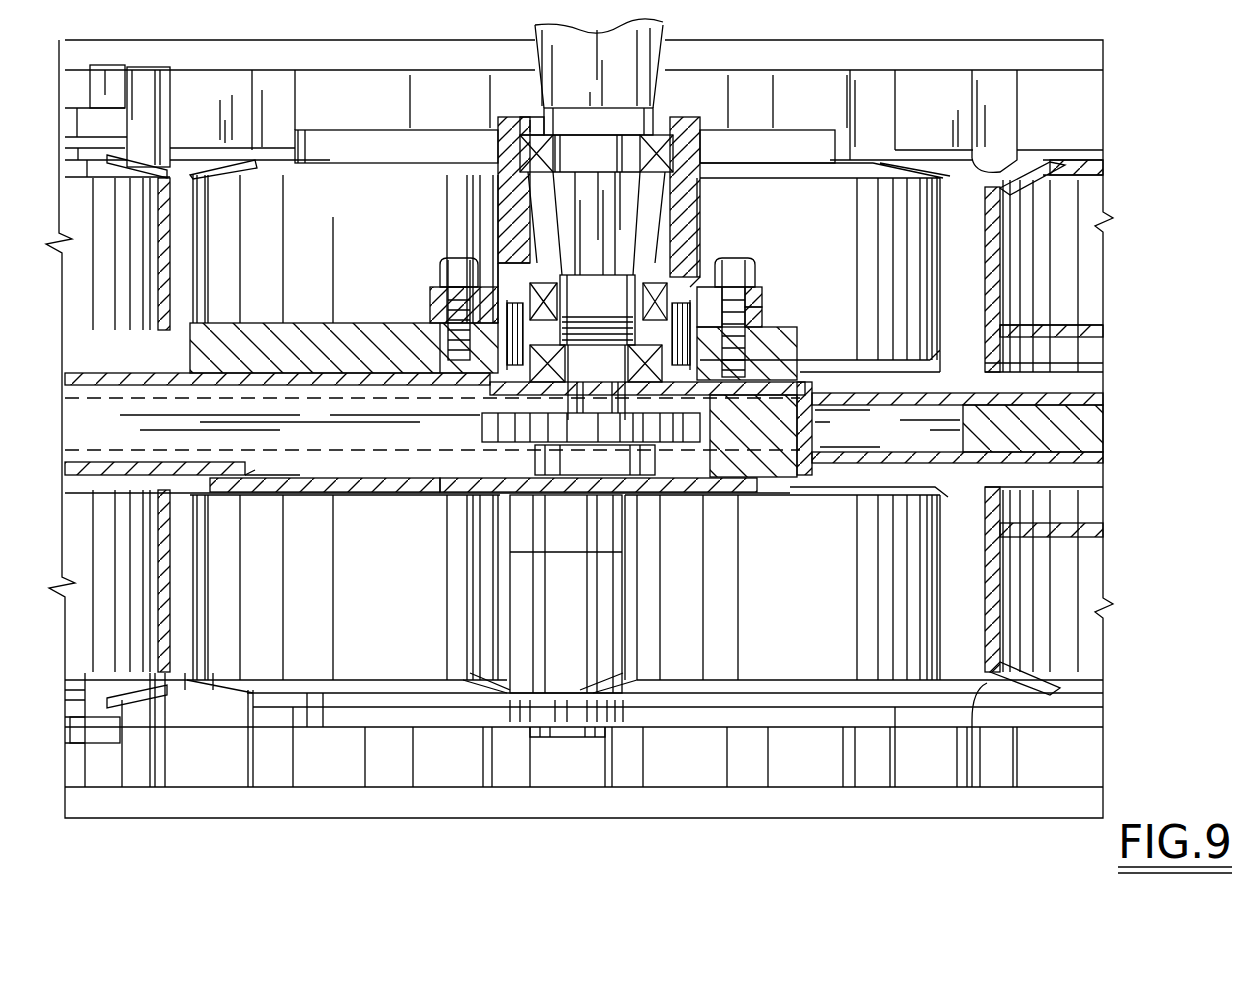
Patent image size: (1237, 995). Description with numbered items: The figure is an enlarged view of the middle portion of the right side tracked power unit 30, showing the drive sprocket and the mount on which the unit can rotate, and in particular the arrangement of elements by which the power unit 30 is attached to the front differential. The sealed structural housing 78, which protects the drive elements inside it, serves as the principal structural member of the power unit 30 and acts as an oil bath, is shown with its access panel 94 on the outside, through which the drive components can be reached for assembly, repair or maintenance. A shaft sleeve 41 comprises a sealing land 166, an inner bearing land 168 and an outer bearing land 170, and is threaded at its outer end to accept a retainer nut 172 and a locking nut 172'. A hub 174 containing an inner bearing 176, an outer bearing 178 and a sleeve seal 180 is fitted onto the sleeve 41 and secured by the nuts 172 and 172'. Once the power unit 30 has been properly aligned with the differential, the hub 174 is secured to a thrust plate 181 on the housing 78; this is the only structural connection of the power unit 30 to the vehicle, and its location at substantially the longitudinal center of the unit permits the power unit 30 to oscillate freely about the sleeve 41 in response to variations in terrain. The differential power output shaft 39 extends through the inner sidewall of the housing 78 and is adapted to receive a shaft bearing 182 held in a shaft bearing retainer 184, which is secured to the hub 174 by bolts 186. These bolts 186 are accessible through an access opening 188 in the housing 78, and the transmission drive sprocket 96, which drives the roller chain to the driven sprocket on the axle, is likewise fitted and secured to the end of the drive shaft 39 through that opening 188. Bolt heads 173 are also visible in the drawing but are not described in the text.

The tracked power unit 30 is at (514, 830).
The shaft sleeve 41 is at (627, 74).
The differential power output shaft 39 is at (584, 384).
The structural housing 78 is at (270, 373).
The access panel 94 is at (700, 483).
The transmission drive sprocket 96 is at (590, 427).
The sealing land 166 is at (617, 118).
The inner bearing land 168 is at (545, 120).
The outer bearing land 170 is at (600, 285).
The retainer nut 172 is at (778, 281).
The locking nut 172' is at (780, 306).
The bolt 173 is at (458, 260).
The hub 174 is at (498, 182).
The inner bearing 176 is at (673, 150).
The outer bearing 178 is at (655, 277).
The sleeve seal 180 is at (537, 128).
The thrust plate 181 is at (313, 340).
The shaft bearing 182 is at (445, 287).
The shaft bearing retainer 184 is at (495, 360).
The bolts 186 is at (498, 430).
The access opening 188 is at (335, 467).